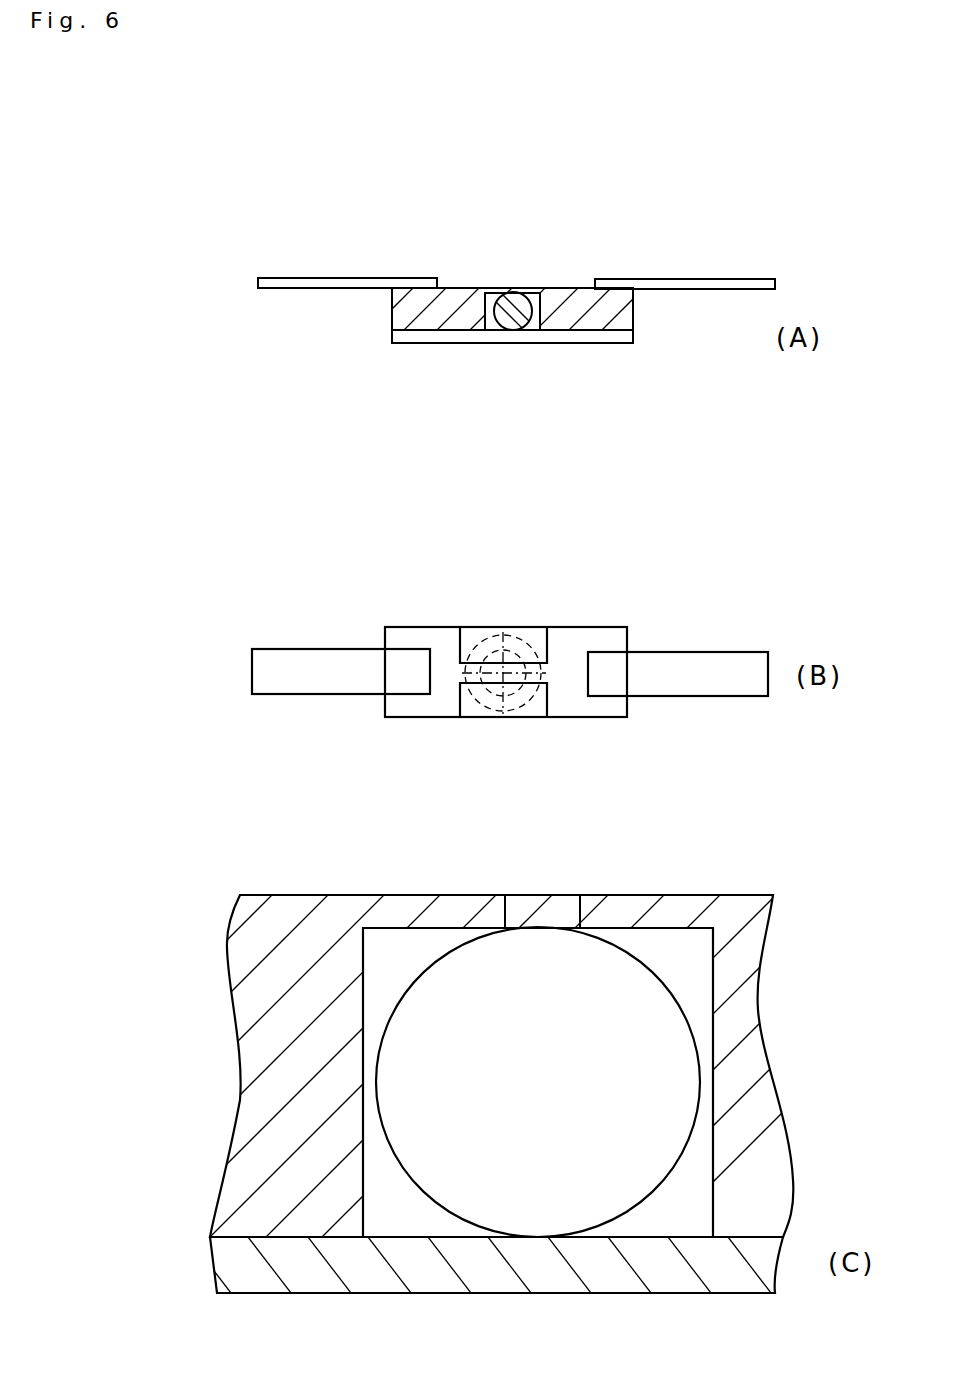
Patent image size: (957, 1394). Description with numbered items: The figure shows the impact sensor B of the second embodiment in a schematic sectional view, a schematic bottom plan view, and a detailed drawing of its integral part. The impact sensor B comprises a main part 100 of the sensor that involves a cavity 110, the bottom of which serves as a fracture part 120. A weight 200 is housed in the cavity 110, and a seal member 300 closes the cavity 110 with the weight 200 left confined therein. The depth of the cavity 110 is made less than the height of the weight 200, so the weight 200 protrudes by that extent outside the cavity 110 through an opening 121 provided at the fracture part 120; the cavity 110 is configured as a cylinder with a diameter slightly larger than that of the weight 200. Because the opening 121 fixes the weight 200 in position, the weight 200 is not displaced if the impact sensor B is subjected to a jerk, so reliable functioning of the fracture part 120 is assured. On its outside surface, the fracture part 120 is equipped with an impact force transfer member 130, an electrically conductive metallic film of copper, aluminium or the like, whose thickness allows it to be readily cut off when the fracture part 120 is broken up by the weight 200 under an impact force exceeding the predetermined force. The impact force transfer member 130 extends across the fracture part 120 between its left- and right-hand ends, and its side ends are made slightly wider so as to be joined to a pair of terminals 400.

The main part of sensor 100 is at (633, 320).
The cavity 110 is at (490, 330).
The fracture part 120 is at (497, 288).
The opening 121 is at (511, 293).
The impact force transfer member 130 is at (543, 676).
The weight 200 is at (517, 320).
The seal member 300 is at (392, 342).
The terminals 400 is at (298, 278).
The impact sensor B is at (645, 240).